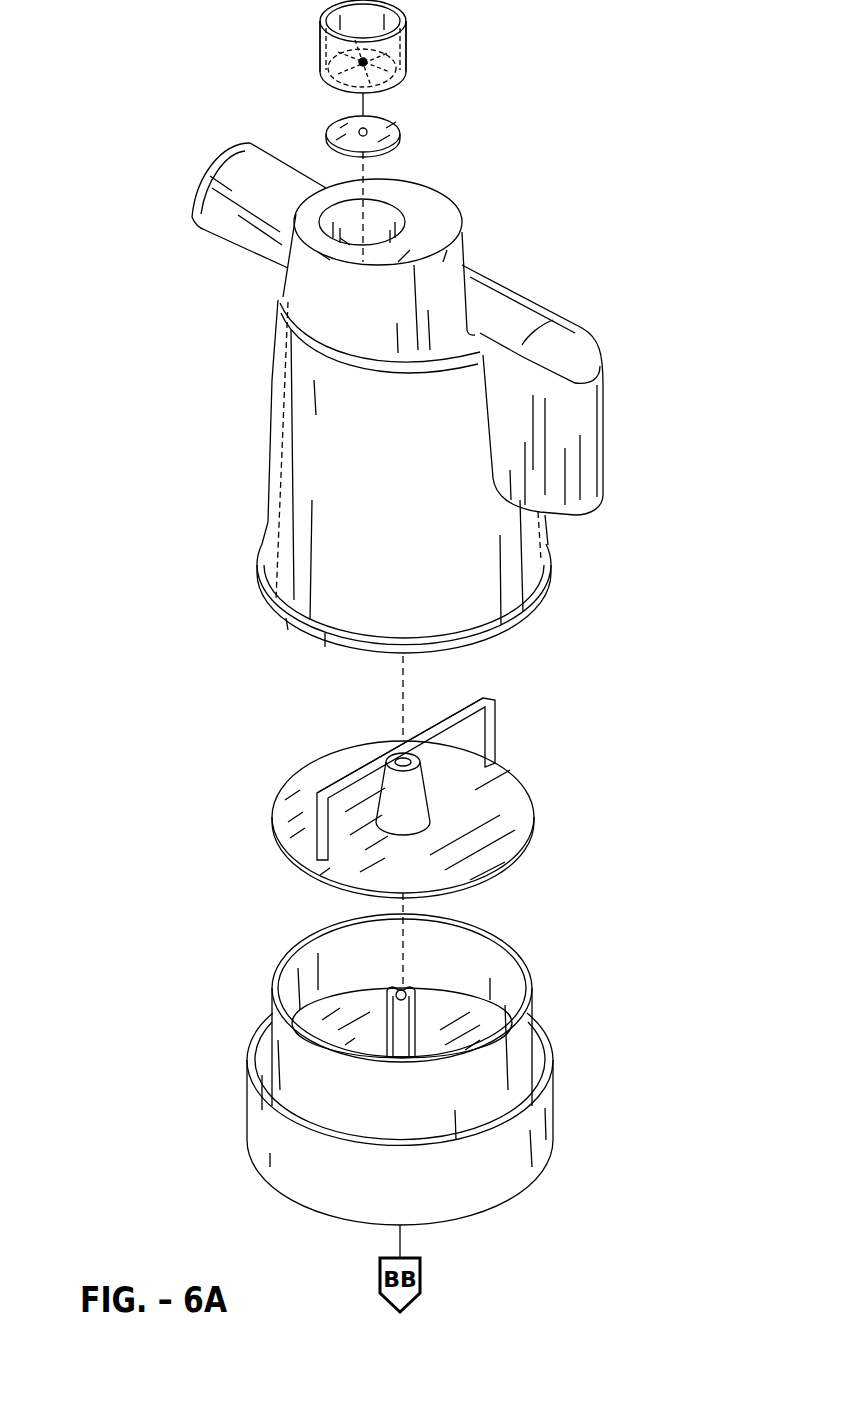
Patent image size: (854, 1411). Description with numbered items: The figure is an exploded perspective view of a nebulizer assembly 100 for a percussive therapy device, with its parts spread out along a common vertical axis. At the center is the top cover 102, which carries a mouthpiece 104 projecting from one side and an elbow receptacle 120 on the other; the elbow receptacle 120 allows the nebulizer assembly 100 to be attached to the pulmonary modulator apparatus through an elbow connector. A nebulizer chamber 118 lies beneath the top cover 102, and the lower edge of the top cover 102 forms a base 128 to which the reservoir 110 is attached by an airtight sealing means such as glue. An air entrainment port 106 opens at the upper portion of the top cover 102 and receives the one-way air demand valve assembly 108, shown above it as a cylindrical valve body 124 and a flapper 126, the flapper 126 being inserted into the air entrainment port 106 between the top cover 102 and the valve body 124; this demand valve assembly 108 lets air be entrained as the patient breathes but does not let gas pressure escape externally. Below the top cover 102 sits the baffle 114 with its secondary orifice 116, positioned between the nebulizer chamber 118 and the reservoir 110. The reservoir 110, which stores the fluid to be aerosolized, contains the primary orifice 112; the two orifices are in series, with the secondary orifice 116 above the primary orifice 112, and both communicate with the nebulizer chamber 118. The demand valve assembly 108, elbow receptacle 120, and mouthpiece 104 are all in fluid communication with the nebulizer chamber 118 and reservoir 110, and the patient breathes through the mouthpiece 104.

The nebulizer assembly 100 is at (725, 12).
The top cover 102 is at (270, 420).
The mouthpiece 104 is at (200, 227).
The air entrainment port 106 is at (387, 216).
The one-way air demand valve assembly 108 is at (428, 0).
The reservoir 110 is at (273, 1167).
The primary orifice 112 is at (397, 987).
The baffle 114 is at (282, 803).
The secondary orifice 116 is at (407, 768).
The nebulizer chamber 118 is at (263, 508).
The elbow receptacle 120 is at (606, 442).
The cylindrical valve body 124 is at (322, 62).
The flapper 126 is at (327, 131).
The base 128 is at (277, 617).